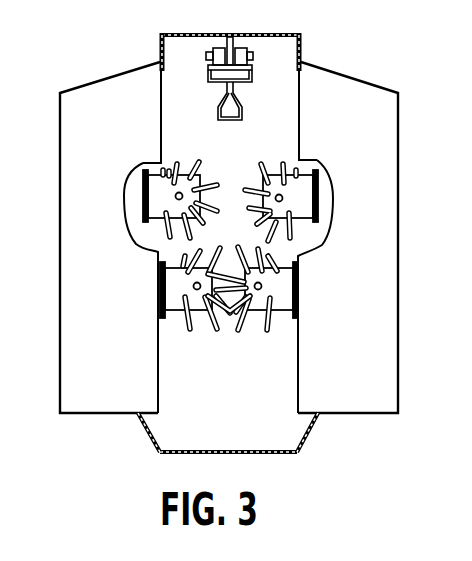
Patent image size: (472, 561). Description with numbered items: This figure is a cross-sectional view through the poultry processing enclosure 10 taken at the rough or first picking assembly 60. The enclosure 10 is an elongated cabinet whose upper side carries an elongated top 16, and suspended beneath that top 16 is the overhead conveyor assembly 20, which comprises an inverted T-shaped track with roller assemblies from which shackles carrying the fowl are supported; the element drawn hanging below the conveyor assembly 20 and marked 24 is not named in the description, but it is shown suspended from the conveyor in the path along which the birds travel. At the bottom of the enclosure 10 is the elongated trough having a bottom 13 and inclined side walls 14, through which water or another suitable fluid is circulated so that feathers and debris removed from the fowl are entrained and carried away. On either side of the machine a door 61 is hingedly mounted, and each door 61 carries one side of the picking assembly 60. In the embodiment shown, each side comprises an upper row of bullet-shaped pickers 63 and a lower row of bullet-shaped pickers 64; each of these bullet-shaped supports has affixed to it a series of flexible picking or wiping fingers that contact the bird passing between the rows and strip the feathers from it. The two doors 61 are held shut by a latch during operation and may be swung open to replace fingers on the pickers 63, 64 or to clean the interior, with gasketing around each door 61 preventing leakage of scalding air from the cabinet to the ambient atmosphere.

The poultry processing enclosure 10 is at (338, 60).
The bottom 13 is at (252, 456).
The side walls 14 is at (146, 430).
The top 16 is at (204, 33).
The overhead conveyor assembly 20 is at (204, 71).
The pendant deflector 24 is at (243, 109).
The first picking assembly 60 is at (237, 348).
The door 61 is at (108, 359).
The upper row of bullet-shaped pickers 63 is at (186, 185).
The lower row of bullet-shaped pickers 64 is at (178, 278).